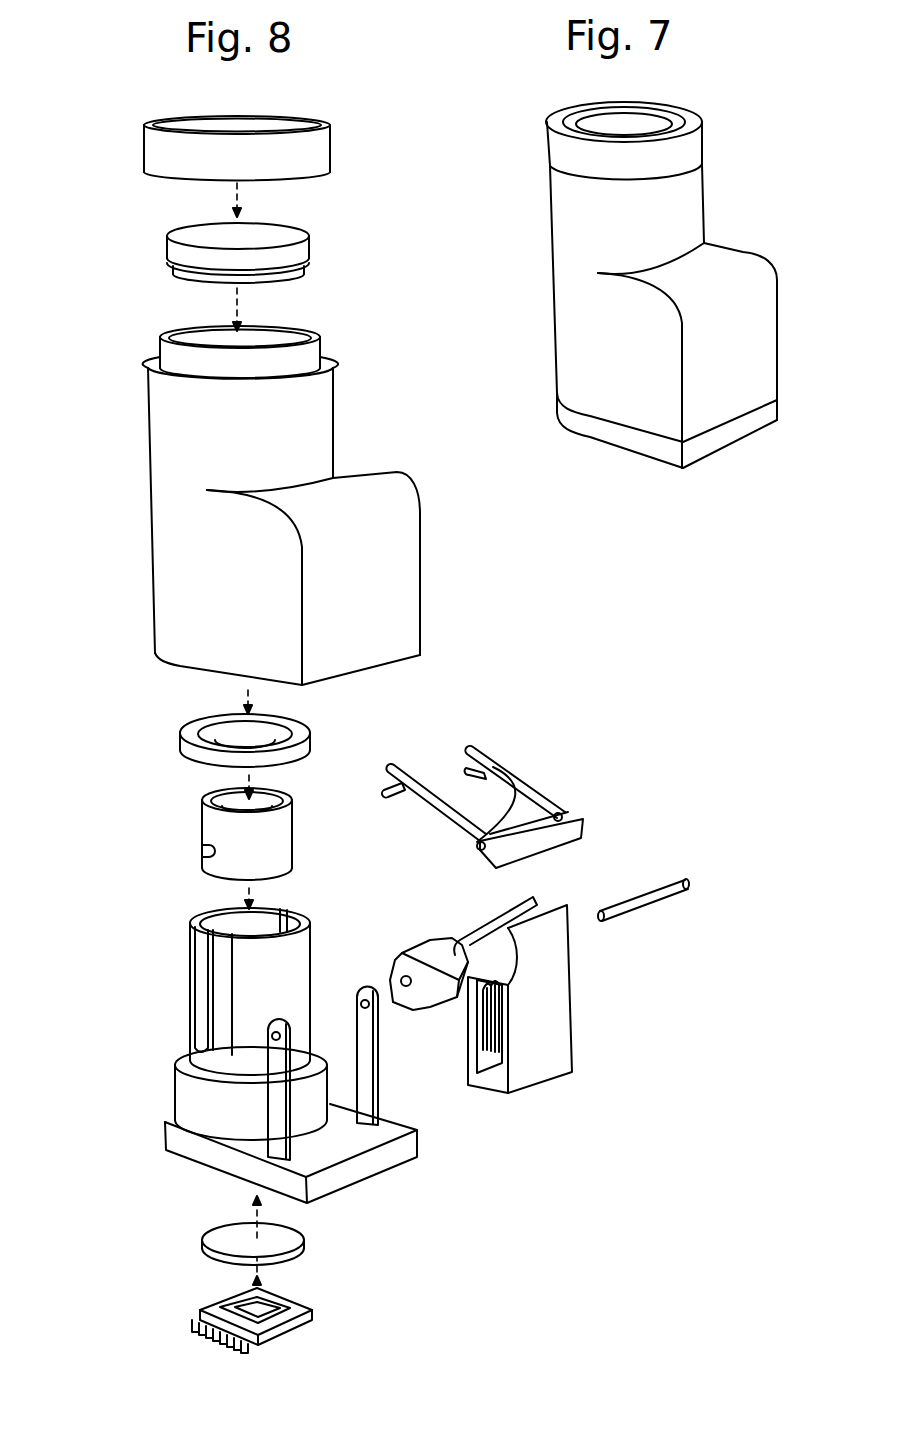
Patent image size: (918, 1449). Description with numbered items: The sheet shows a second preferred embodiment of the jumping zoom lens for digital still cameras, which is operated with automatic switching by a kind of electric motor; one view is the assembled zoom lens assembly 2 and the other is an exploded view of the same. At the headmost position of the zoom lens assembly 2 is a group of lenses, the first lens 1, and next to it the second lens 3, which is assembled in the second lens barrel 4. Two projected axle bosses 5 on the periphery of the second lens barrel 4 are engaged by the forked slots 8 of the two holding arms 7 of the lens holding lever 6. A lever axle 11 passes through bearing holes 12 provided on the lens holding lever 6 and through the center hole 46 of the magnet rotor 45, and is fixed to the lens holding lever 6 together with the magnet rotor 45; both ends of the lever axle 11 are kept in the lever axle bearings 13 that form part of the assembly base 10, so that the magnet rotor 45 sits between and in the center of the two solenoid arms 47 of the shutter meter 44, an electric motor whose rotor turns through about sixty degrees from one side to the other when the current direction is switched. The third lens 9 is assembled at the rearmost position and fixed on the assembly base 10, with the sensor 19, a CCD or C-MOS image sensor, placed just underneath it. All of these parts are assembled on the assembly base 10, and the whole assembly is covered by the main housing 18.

In FIG. 8, the first lens 1 is at (295, 232).
In FIG. 7, the zoom lens assembly 2 is at (745, 272).
In FIG. 8, the second lens 3 is at (267, 795).
In FIG. 8, the second lens barrel 4 is at (202, 823).
In FIG. 8, the axle bosses 5 is at (203, 850).
In FIG. 8, the lens holding lever 6 is at (563, 843).
In FIG. 8, the holding arms 7 is at (493, 767).
In FIG. 8, the forked slots 8 is at (465, 757).
In FIG. 8, the third lens 9 is at (287, 1245).
In FIG. 8, the assembly base 10 is at (185, 1103).
In FIG. 8, the lever axle 11 is at (680, 882).
In FIG. 8, the bearing holes 12 is at (550, 806).
In FIG. 8, the lever axle bearings 13 is at (276, 1040).
In FIG. 8, the main housing 18 is at (378, 493).
In FIG. 8, the sensor 19 is at (287, 1307).
In FIG. 8, the shutter meter 44 is at (550, 1033).
In FIG. 8, the magnet rotor 45 is at (437, 935).
In FIG. 8, the center hole 46 is at (400, 978).
In FIG. 8, the solenoid arms 47 is at (490, 908).